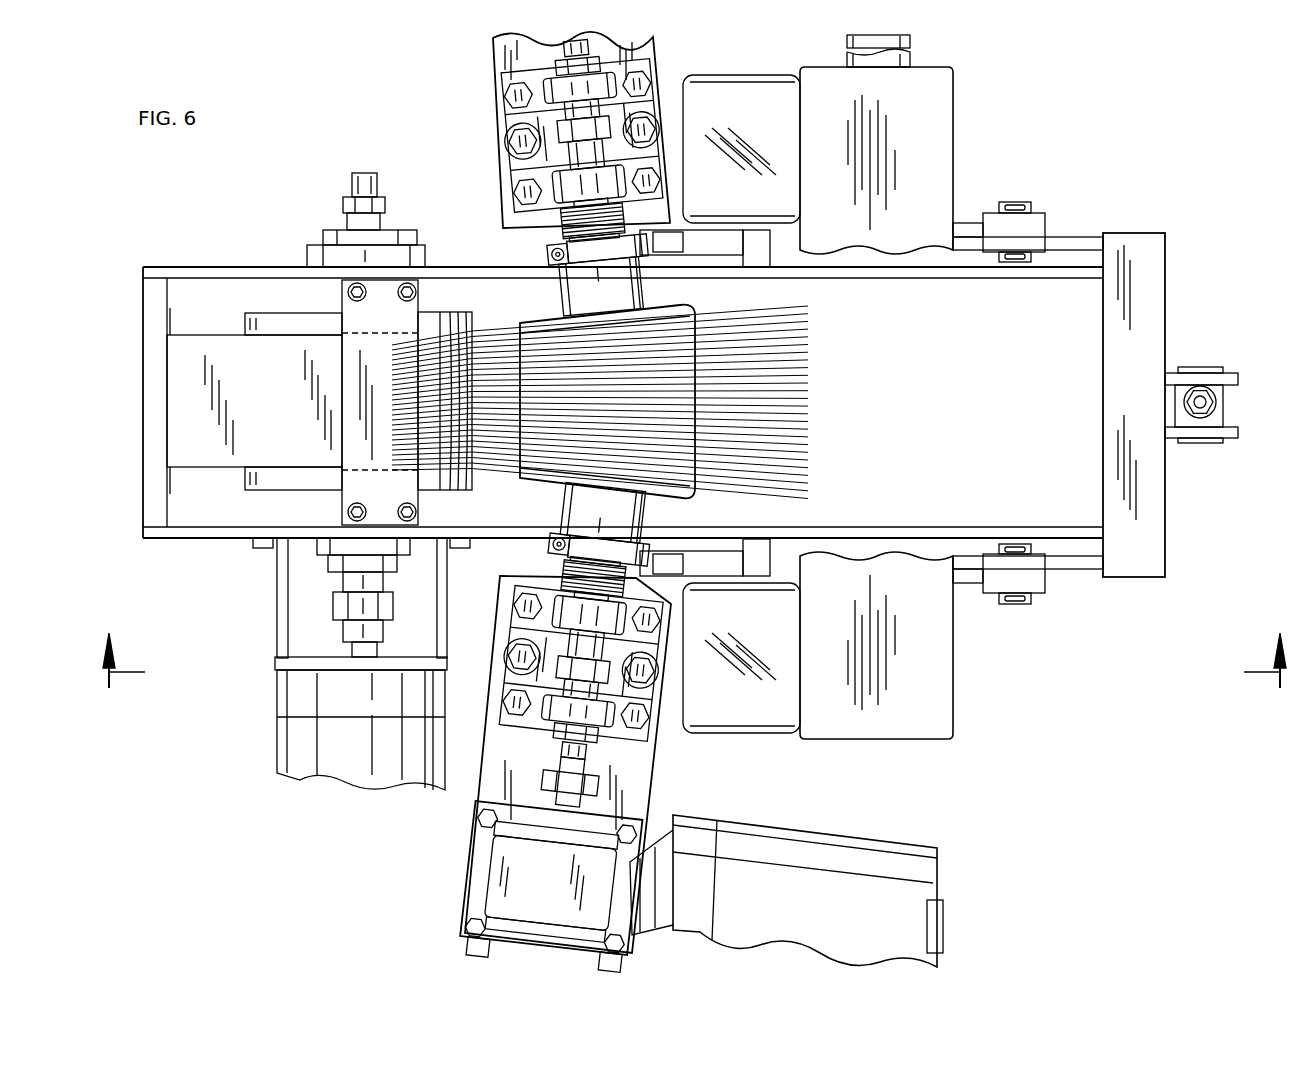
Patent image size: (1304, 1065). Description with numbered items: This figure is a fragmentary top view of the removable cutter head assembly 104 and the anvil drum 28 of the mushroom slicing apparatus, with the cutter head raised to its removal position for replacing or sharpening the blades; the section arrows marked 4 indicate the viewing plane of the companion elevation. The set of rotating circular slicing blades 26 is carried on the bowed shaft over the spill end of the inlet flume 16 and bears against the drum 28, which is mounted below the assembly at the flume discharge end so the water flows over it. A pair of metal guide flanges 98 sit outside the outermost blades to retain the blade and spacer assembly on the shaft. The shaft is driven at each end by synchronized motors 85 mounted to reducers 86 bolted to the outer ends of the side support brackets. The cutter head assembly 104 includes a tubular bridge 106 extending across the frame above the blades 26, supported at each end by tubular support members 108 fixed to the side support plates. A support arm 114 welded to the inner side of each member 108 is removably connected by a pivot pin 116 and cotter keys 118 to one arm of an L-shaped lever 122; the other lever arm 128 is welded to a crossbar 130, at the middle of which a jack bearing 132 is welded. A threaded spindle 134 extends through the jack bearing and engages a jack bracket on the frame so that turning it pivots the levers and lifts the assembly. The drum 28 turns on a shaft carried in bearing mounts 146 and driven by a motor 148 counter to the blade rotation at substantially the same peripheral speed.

The inlet flume 16 is at (192, 266).
The rotating circular slicing blades 26 is at (808, 303).
The anvil roll or drum 28 is at (480, 488).
The synchronized motor 85 is at (850, 836).
The reducer 86 is at (542, 889).
The metal guide flange 98 is at (683, 307).
The removable cutter head assembly 104 is at (434, 208).
The tubular member or bridge 106 is at (953, 86).
The tubular support member 108 is at (752, 78).
The support arm 114 is at (967, 222).
The pivot pin 116 is at (1030, 204).
The cotter key 118 is at (1012, 204).
The L-shaped lever 122 is at (1050, 210).
The lever arm 128 is at (1096, 237).
The crossbar 130 is at (1165, 250).
The jack bearing 132 is at (1240, 375).
The threaded spindle 134 is at (1200, 416).
The bearing mount 146 is at (307, 256).
The motor 148 is at (275, 738).
The section line 4 is at (695, 664).